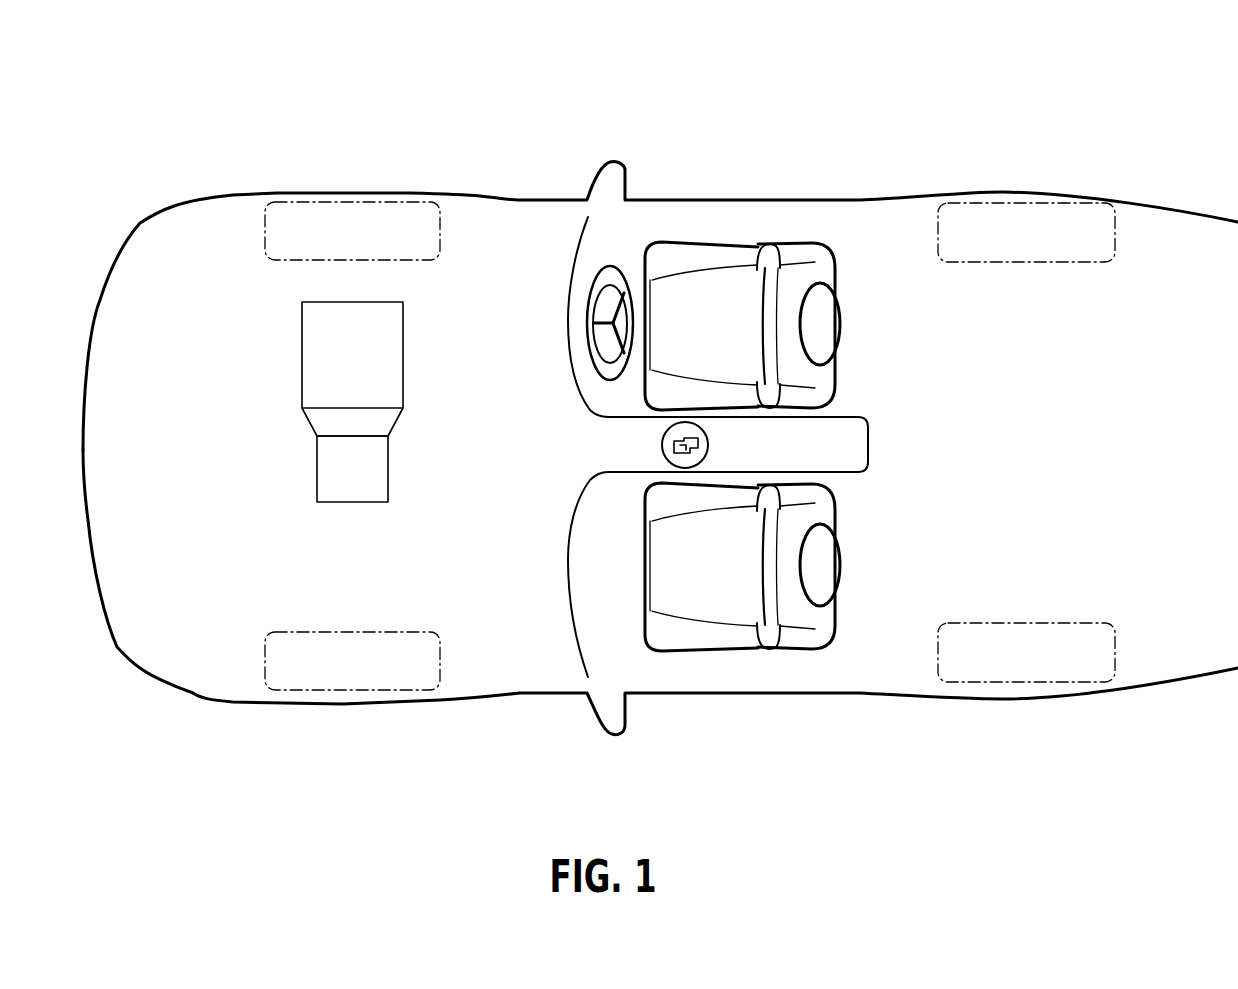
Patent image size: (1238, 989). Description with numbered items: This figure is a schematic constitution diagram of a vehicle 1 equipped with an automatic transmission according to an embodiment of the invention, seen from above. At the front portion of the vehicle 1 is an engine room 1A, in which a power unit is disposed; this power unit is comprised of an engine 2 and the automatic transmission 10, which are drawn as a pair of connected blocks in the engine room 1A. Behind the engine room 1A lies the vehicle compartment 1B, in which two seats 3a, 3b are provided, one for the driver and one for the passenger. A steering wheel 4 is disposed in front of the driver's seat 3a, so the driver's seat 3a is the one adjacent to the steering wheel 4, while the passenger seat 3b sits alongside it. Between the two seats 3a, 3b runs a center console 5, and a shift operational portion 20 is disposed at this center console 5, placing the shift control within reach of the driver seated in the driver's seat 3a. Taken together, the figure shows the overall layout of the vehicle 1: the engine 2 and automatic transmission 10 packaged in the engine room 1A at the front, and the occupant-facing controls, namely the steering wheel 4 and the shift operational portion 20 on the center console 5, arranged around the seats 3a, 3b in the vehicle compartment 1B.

The vehicle 1 is at (1131, 124).
The engine room 1A is at (196, 572).
The vehicle compartment 1B is at (1020, 452).
The engine 2 is at (302, 365).
The automatic transmission 10 is at (295, 480).
The driver's seat 3a is at (828, 328).
The passenger seat 3b is at (842, 562).
The steering wheel 4 is at (606, 323).
The center console 5 is at (607, 450).
The shift operational portion 20 is at (718, 447).